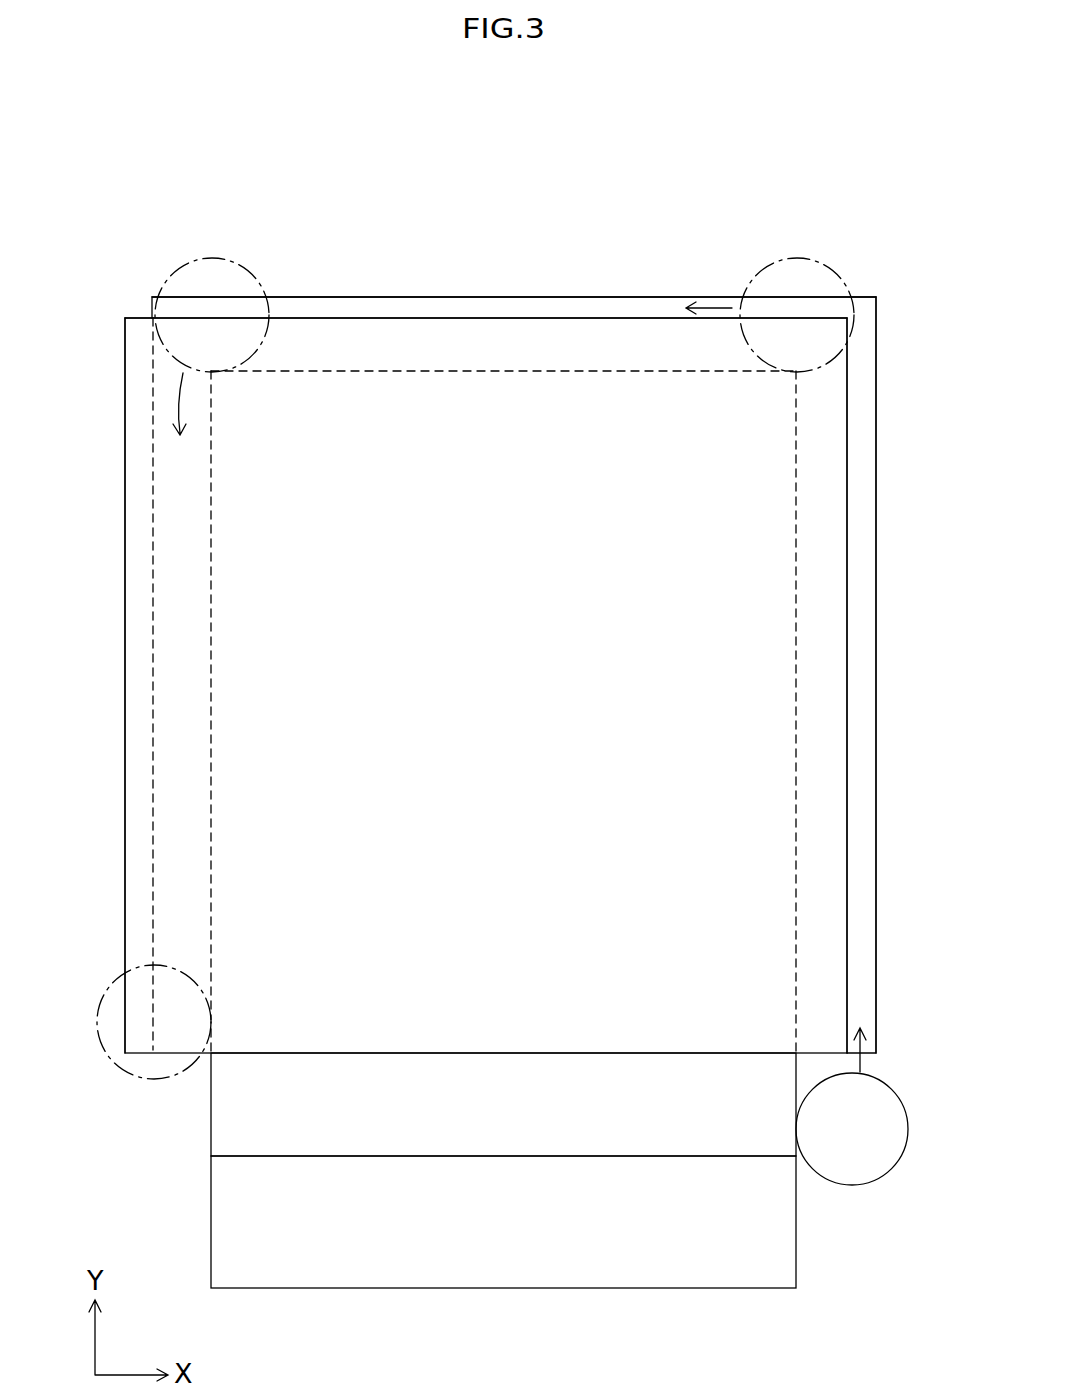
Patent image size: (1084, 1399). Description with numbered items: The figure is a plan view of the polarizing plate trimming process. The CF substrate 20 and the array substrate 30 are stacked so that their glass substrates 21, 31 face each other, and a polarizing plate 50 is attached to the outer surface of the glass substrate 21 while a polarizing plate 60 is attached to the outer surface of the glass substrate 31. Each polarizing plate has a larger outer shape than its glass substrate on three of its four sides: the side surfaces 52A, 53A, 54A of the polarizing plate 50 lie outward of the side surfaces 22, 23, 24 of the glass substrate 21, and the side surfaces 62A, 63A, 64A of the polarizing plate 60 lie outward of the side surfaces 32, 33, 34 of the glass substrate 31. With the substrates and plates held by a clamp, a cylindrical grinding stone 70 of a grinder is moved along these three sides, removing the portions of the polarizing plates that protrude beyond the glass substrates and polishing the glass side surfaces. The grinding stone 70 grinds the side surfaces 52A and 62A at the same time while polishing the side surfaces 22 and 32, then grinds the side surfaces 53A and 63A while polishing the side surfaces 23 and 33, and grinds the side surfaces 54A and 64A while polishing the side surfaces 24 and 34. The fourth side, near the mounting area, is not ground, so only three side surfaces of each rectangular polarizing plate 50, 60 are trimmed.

The CF substrate 20 is at (507, 1123).
The glass substrate 21 is at (503, 1199).
The side surface 22 is at (870, 712).
The side surface 23 is at (503, 302).
The side surface 24 is at (135, 712).
The array substrate 30 is at (622, 1257).
The glass substrate 31 is at (503, 1251).
The side surface 32 is at (797, 663).
The side surface 33 is at (335, 371).
The side surface 34 is at (211, 603).
The polarizing plate 50 is at (527, 400).
The side surface 52A is at (847, 537).
The side surface 53A is at (461, 318).
The side surface 54A is at (125, 443).
The polarizing plate 60 is at (856, 795).
The side surface 62A is at (876, 720).
The side surface 63A is at (621, 295).
The side surface 64A is at (153, 733).
The grinding stone 70 is at (851, 1166).